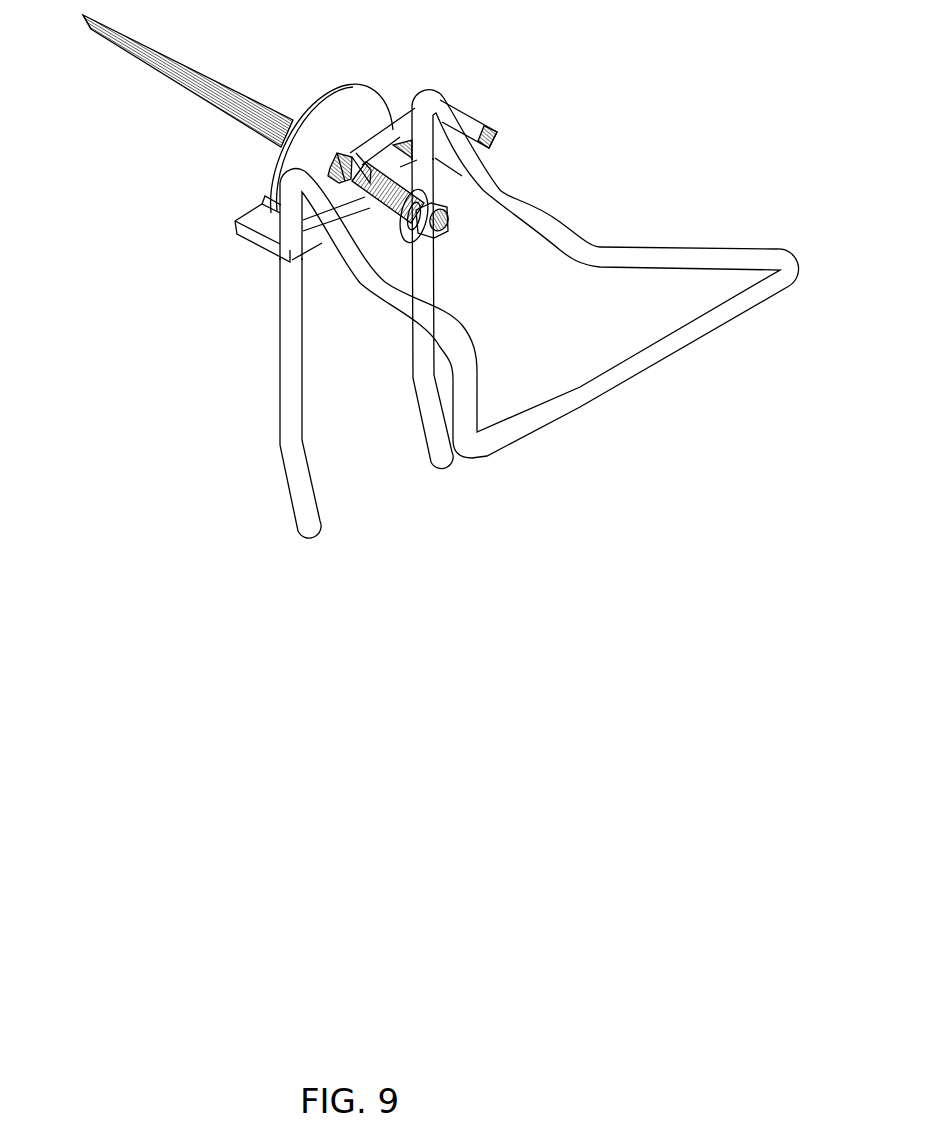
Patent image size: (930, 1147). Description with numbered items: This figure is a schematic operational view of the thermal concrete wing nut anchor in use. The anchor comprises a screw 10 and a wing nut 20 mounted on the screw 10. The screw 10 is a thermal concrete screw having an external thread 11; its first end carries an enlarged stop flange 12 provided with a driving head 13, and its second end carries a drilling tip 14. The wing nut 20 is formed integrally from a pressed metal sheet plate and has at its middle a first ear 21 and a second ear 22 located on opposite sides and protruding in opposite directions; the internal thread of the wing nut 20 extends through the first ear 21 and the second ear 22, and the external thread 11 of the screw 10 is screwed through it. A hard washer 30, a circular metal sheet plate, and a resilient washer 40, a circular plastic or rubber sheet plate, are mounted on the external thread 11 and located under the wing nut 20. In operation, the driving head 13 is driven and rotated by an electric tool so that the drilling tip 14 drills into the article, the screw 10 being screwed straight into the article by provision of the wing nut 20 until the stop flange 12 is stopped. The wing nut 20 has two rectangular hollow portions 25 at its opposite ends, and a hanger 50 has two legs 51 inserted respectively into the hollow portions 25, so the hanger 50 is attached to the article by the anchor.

The screw 10 is at (462, 234).
The external thread 11 is at (218, 82).
The stop flange 12 is at (429, 201).
The driving head 13 is at (440, 236).
The drilling tip 14 is at (87, 26).
The wing nut 20 is at (260, 237).
The first ear 21 is at (355, 155).
The second ear 22 is at (362, 195).
The hollow portions 25 is at (270, 215).
The hard washer 30 is at (381, 100).
The resilient washer 40 is at (321, 95).
The hanger 50 is at (640, 363).
The legs 51 is at (282, 372).